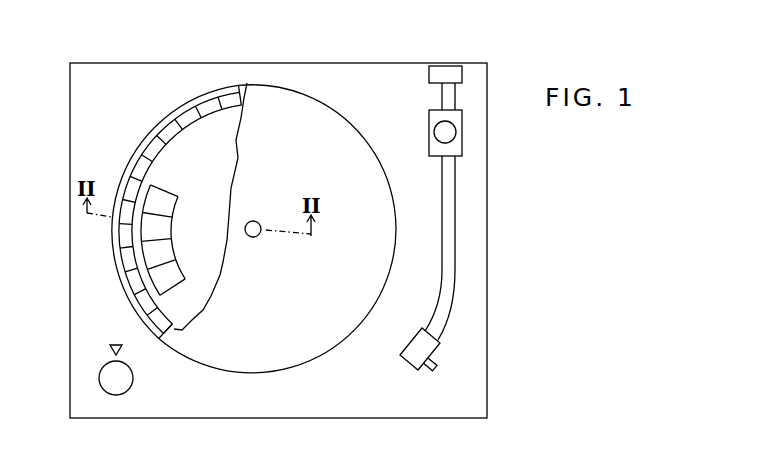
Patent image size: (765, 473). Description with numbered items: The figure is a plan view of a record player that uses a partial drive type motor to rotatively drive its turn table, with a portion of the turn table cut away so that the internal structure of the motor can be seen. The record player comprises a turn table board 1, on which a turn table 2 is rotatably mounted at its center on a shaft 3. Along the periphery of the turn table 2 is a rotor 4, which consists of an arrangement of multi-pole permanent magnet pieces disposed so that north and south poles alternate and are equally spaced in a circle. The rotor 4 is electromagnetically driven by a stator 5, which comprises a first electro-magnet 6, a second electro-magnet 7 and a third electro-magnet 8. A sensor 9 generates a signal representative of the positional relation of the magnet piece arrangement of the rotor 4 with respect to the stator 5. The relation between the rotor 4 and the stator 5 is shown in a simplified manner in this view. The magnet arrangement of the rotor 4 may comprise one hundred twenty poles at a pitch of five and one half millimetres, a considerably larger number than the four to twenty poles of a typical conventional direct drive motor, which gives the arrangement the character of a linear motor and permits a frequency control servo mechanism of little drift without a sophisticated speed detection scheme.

The turn table board 1 is at (289, 63).
The turn table 2 is at (301, 371).
The shaft 3 is at (258, 221).
The rotor 4 is at (185, 103).
The stator 5 is at (208, 237).
The first electro-magnet 6 is at (124, 218).
The second electro-magnet 7 is at (132, 277).
The third electro-magnet 8 is at (142, 288).
The sensor 9 is at (150, 186).